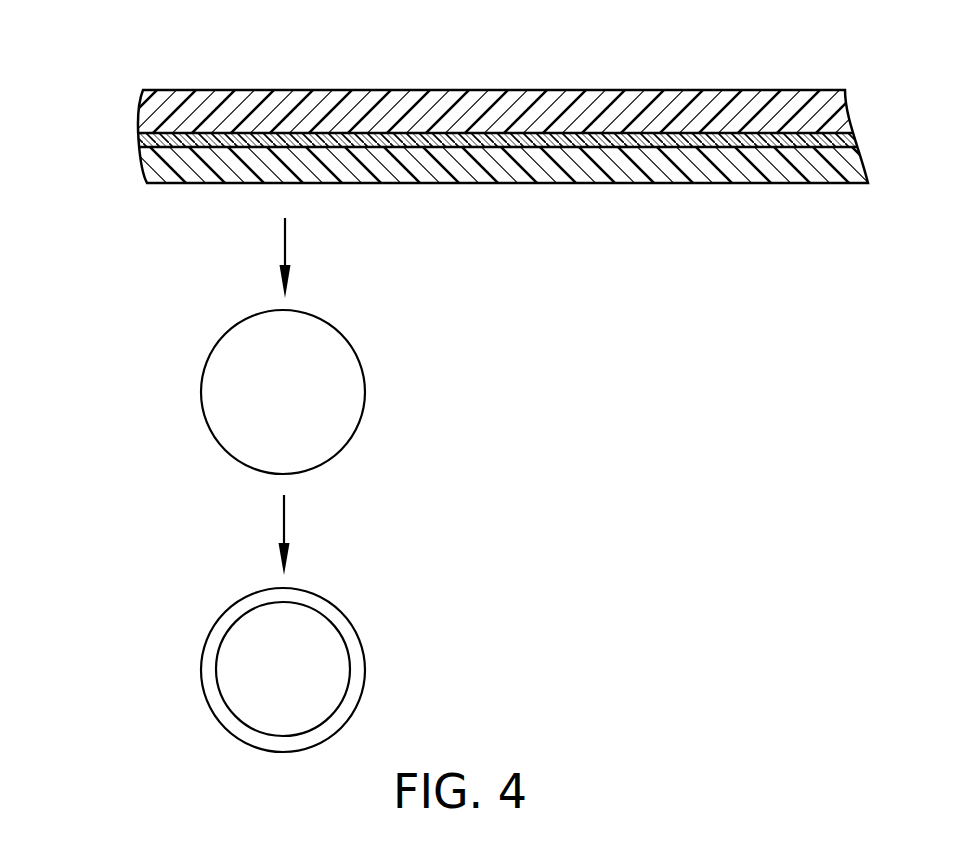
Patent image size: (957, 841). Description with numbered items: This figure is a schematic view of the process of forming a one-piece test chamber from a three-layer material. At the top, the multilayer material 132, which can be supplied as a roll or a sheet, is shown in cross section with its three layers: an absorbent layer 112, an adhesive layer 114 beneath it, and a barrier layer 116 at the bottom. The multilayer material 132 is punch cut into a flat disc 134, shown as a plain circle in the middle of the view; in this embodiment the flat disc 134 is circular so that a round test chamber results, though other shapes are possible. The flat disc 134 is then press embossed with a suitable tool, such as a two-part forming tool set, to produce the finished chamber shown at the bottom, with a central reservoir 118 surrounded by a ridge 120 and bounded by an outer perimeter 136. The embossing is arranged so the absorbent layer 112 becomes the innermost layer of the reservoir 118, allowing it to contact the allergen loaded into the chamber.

The multilayer material 132 is at (461, 98).
The absorbent layer 112 is at (135, 117).
The adhesive layer 114 is at (140, 147).
The barrier layer 116 is at (143, 163).
The flat disc 134 is at (203, 409).
The outer perimeter 136 is at (244, 683).
The ridge 120 is at (218, 631).
The reservoir 118 is at (243, 700).